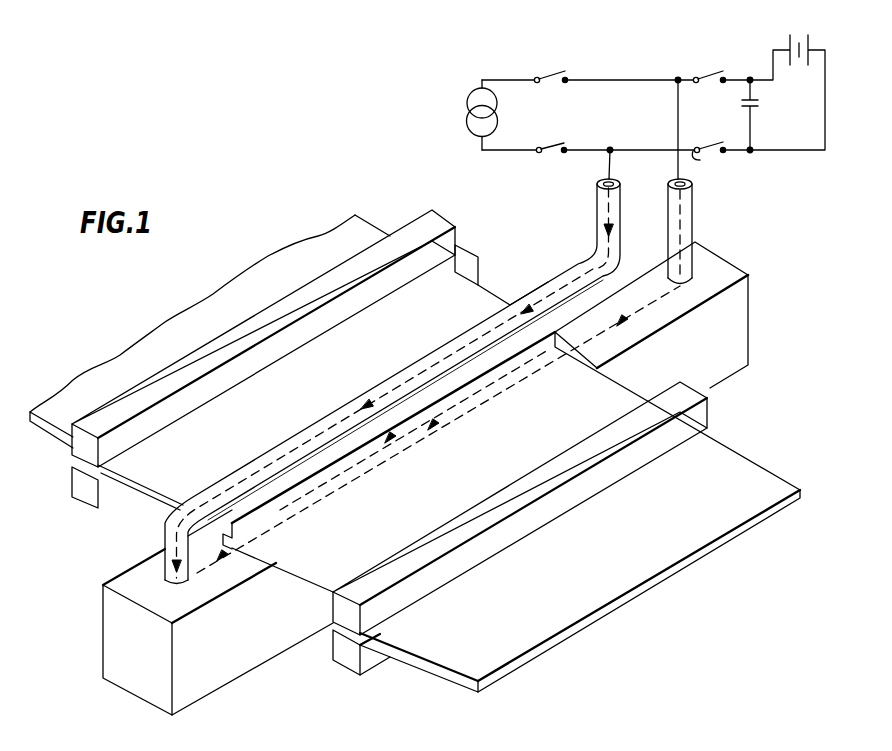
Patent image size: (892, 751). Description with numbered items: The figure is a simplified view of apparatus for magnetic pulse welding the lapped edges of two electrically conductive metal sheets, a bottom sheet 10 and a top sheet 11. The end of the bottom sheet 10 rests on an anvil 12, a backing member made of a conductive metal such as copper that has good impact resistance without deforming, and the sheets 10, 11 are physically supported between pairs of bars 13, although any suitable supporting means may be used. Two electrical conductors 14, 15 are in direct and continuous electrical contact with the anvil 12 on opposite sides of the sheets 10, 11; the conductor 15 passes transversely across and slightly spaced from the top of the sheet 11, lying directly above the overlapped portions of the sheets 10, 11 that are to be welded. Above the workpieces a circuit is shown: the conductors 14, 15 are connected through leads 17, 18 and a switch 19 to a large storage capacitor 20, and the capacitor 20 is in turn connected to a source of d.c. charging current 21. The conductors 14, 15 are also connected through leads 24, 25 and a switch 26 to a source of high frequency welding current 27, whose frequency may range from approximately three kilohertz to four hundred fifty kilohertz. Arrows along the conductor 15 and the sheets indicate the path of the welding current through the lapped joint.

The bottom sheet 10 is at (297, 590).
The top sheet 11 is at (157, 493).
The anvil 12 is at (139, 573).
The bars 13 is at (82, 484).
The electrical conductor 14 is at (693, 231).
The electrical conductor 15 is at (578, 268).
The lead 17 is at (687, 153).
The lead 18 is at (689, 73).
The switch 19 is at (713, 73).
The storage capacitor 20 is at (758, 107).
The source of d.c. charging current 21 is at (808, 68).
The lead 24 is at (590, 147).
The lead 25 is at (635, 77).
The switch 26 is at (553, 76).
The source of high frequency welding current 27 is at (470, 127).